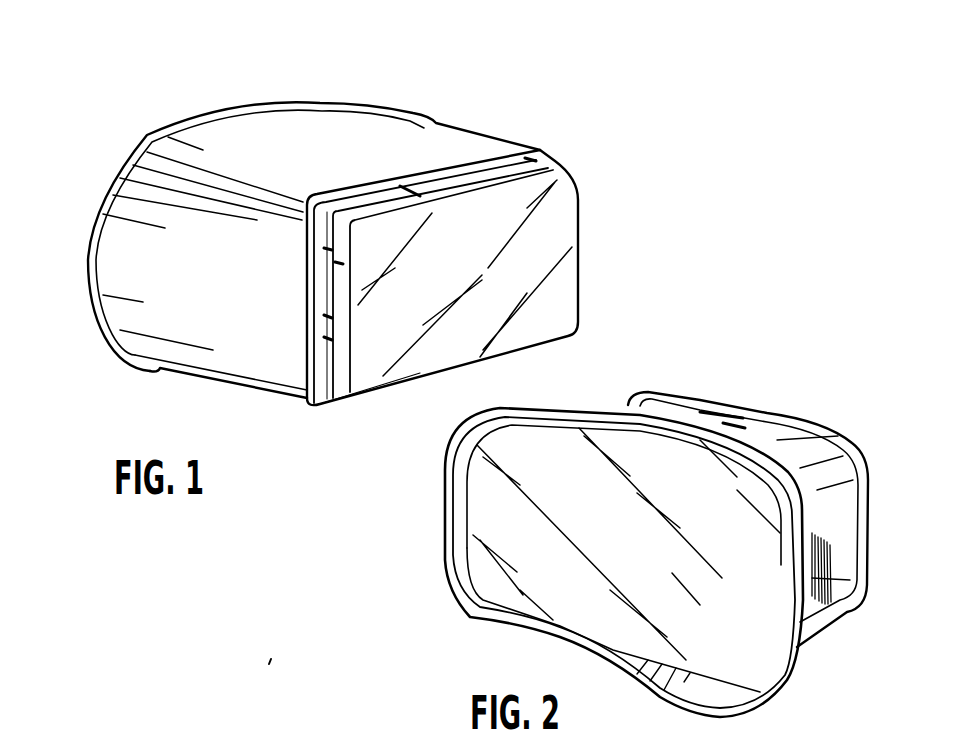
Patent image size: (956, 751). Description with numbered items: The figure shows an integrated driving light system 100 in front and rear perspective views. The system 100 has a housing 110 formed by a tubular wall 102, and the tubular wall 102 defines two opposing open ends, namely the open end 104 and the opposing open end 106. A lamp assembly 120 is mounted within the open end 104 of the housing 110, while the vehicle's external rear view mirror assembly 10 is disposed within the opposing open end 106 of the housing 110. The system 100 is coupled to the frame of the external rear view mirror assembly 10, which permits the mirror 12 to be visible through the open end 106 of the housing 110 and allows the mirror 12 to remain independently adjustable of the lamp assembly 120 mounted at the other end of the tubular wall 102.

In FIG. 1, the integrated driving light system 100 is at (578, 137).
In FIG. 2, the integrated driving light system 100 is at (764, 390).
In FIG. 1, the tubular wall 102 is at (120, 212).
In FIG. 2, the tubular wall 102 is at (853, 493).
In FIG. 1, the open end 104 is at (322, 406).
In FIG. 2, the opposing open end 106 is at (462, 508).
In FIG. 1, the housing 110 is at (361, 148).
In FIG. 1, the lamp assembly 120 is at (600, 267).
In FIG. 2, the external rear view mirror assembly 10 is at (478, 583).
In FIG. 2, the mirror 12 is at (636, 553).